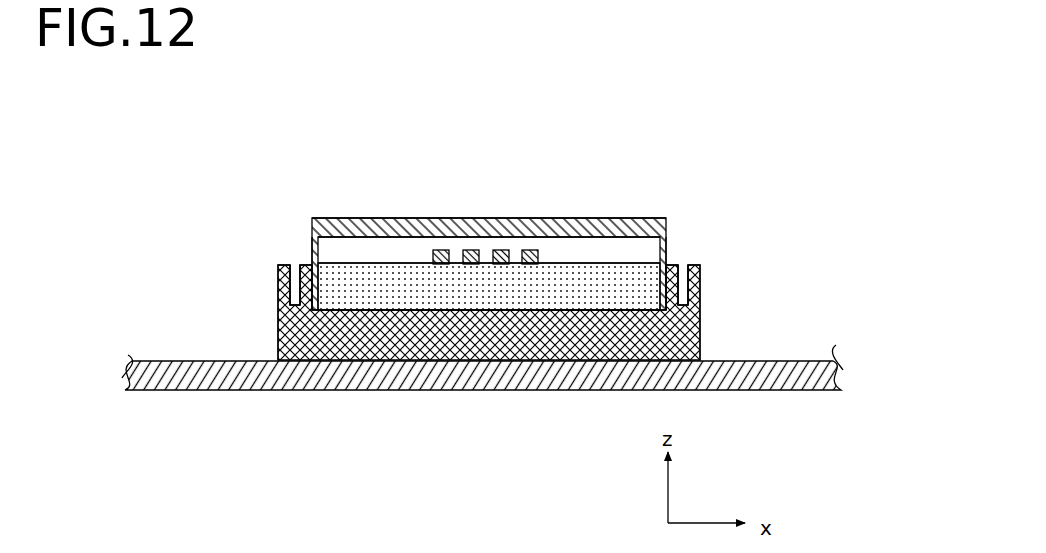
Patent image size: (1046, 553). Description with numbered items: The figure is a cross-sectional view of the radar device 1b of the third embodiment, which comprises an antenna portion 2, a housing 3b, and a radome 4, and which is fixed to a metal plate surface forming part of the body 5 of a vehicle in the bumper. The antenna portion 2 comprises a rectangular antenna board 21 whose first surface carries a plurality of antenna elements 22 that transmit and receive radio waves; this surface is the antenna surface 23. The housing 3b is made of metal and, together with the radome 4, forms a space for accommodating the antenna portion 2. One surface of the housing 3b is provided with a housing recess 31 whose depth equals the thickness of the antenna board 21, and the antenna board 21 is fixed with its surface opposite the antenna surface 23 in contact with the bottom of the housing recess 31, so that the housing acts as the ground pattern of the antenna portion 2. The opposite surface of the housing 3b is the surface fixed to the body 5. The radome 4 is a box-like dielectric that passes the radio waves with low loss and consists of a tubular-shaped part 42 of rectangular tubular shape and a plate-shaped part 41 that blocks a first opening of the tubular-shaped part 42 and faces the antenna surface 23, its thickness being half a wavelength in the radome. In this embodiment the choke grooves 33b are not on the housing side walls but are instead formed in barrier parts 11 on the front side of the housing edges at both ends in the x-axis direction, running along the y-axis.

The radar device 1b is at (611, 123).
The antenna portion 2 is at (593, 252).
The radome 4 is at (357, 218).
The body 5 is at (247, 372).
The barrier parts 11 is at (282, 264).
The antenna board 21 is at (398, 275).
The antenna elements 22 is at (470, 250).
The antenna surface 23 is at (359, 263).
The housing 3b is at (470, 338).
The housing recess 31 is at (537, 300).
The choke grooves 33b is at (296, 298).
The plate-shaped part 41 is at (540, 230).
The tubular-shaped part 42 is at (312, 242).